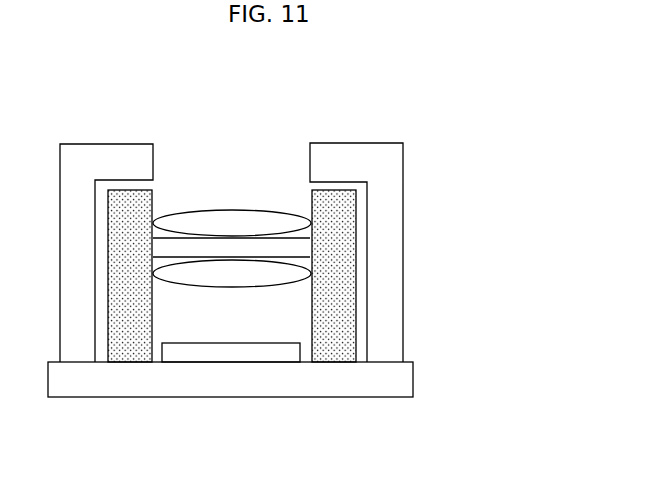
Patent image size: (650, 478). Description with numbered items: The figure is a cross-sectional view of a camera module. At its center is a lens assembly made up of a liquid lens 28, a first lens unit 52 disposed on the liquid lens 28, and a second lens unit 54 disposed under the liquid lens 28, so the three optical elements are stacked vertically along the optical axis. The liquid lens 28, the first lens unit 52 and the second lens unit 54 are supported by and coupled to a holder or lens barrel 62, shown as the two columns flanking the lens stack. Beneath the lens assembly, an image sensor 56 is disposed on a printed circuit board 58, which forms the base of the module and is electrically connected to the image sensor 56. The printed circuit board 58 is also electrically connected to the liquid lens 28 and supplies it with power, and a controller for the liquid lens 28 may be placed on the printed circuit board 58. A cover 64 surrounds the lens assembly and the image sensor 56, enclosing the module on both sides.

The liquid lens 28 is at (320, 248).
The first lens unit 52 is at (232, 205).
The second lens unit 54 is at (232, 294).
The image sensor 56 is at (232, 368).
The printed circuit board 58 is at (420, 377).
The lens barrel 62 is at (336, 369).
The cover 64 is at (412, 253).